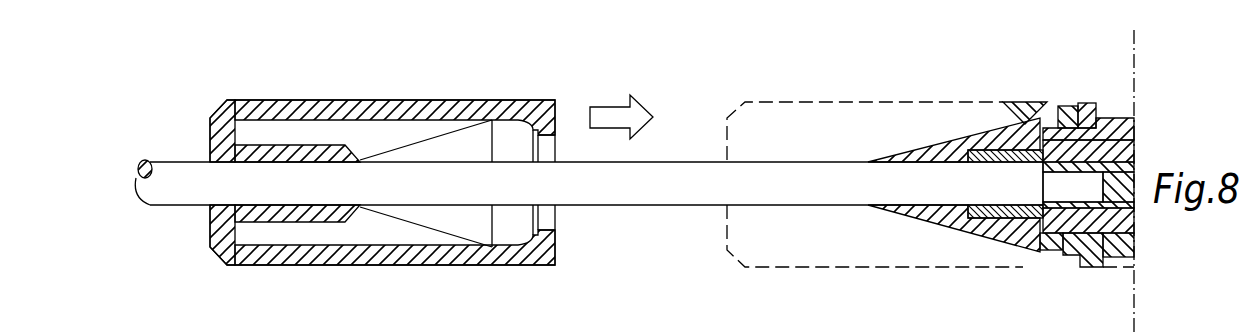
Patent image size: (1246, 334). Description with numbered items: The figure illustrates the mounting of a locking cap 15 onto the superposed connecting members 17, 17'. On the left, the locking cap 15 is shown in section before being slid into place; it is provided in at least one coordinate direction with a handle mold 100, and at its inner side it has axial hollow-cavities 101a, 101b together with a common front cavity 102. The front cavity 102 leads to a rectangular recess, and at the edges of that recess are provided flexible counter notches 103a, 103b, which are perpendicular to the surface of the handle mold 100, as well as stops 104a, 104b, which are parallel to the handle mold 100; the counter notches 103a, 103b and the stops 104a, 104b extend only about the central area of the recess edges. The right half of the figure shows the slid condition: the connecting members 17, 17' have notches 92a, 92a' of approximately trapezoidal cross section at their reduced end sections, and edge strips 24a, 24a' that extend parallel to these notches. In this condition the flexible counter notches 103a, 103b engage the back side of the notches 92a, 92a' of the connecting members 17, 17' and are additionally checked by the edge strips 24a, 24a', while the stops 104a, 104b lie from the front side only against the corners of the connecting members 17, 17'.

The locking cap 15 is at (268, 270).
The handle mold 100 is at (589, 247).
The axial hollow-cavity 101a is at (323, 130).
The axial hollow-cavity 101b is at (351, 237).
The front cavity 102 is at (515, 130).
The stop 104a is at (545, 220).
The stop 104b is at (1073, 253).
The notch 92a is at (955, 263).
The notch 92a' is at (957, 106).
The flexible counter notch 103a is at (1068, 120).
The flexible counter notch 103b is at (1067, 252).
The edge strip 24a is at (1093, 277).
The edge strip 24a' is at (1139, 89).
The connecting member 17 is at (1156, 254).
The connecting member 17' is at (1120, 127).